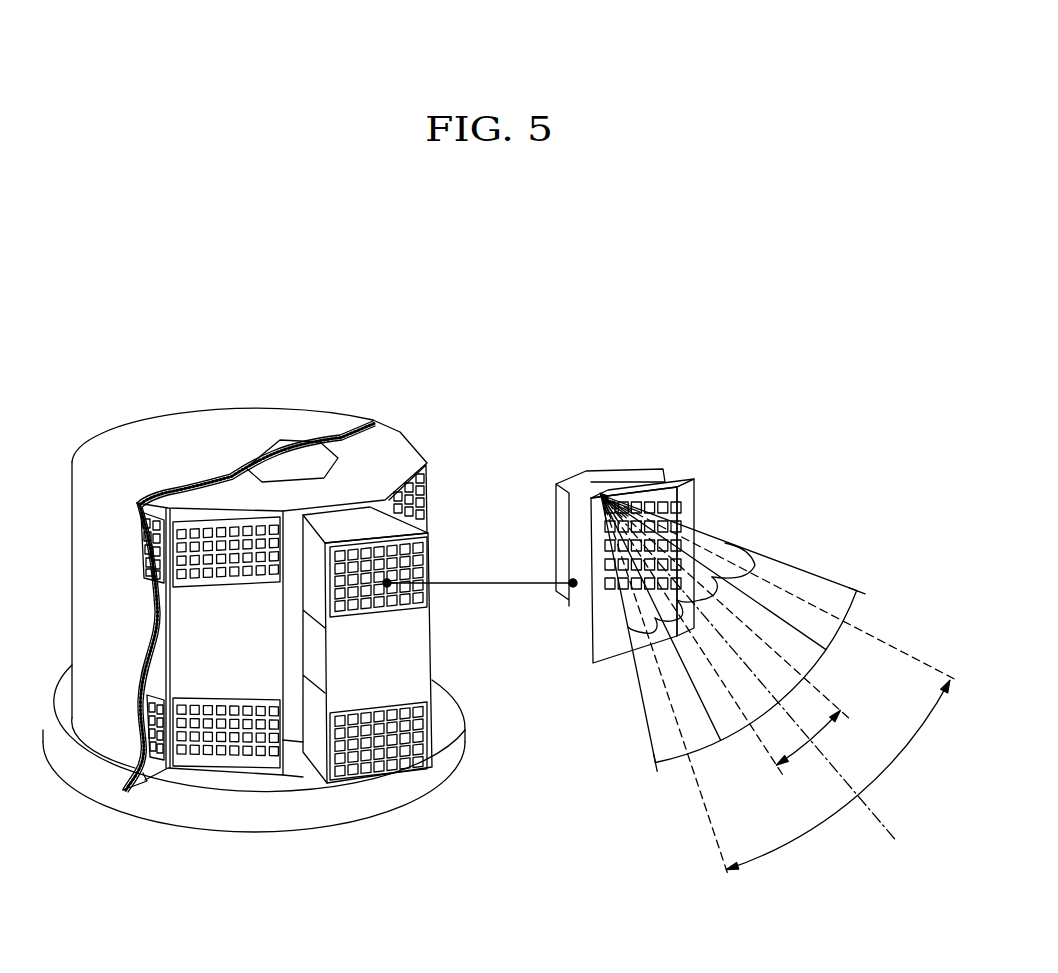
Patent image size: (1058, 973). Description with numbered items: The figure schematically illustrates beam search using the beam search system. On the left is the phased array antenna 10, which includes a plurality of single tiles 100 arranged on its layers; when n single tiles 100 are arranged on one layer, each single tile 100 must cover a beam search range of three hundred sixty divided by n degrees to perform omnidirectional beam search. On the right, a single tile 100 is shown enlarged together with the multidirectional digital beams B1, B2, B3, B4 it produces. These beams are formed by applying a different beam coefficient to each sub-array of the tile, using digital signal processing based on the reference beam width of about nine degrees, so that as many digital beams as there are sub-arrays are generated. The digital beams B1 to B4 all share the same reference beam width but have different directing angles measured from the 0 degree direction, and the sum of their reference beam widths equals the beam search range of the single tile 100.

The phased array antenna 10 is at (172, 425).
The single tile 100 is at (433, 557).
The digital beam B1 is at (667, 750).
The digital beam B2 is at (730, 722).
The digital beam B3 is at (813, 673).
The digital beam B4 is at (852, 615).
The 0 degree reference direction 0 is at (760, 678).